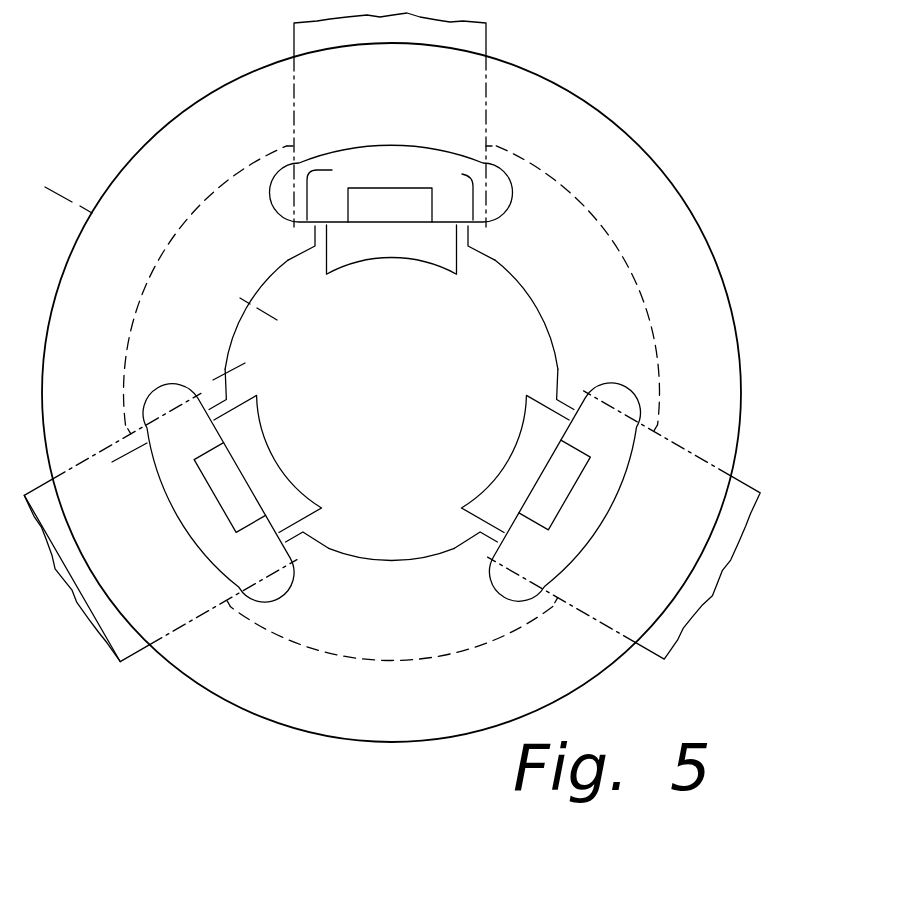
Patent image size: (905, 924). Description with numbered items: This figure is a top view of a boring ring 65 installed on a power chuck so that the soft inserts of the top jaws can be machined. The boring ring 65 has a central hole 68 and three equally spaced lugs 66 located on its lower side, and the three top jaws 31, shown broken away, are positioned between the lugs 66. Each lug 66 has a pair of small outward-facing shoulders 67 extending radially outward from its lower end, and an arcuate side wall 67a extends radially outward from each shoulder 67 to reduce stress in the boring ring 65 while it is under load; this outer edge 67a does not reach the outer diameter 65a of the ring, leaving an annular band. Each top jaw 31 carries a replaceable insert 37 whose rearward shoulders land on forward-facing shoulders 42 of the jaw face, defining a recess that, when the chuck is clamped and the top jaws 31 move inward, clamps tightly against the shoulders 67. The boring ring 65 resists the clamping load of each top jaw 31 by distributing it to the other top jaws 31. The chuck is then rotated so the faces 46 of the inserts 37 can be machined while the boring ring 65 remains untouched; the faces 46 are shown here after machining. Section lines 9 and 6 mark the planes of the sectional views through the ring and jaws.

The boring ring 65 is at (725, 85).
The outer diameter of ring 65a is at (115, 648).
The arcuate side wall 67a is at (297, 645).
The lug 66 is at (532, 288).
The central hole 68 is at (367, 558).
The top jaw 31 is at (477, 42).
The forward-facing shoulder 42 is at (478, 229).
The outward-facing shoulder 67 is at (390, 190).
The face of insert 46 is at (257, 423).
The replaceable insert 37 is at (538, 412).
The section line 9- 9 is at (45, 187).
The section line 6- 6 is at (112, 462).